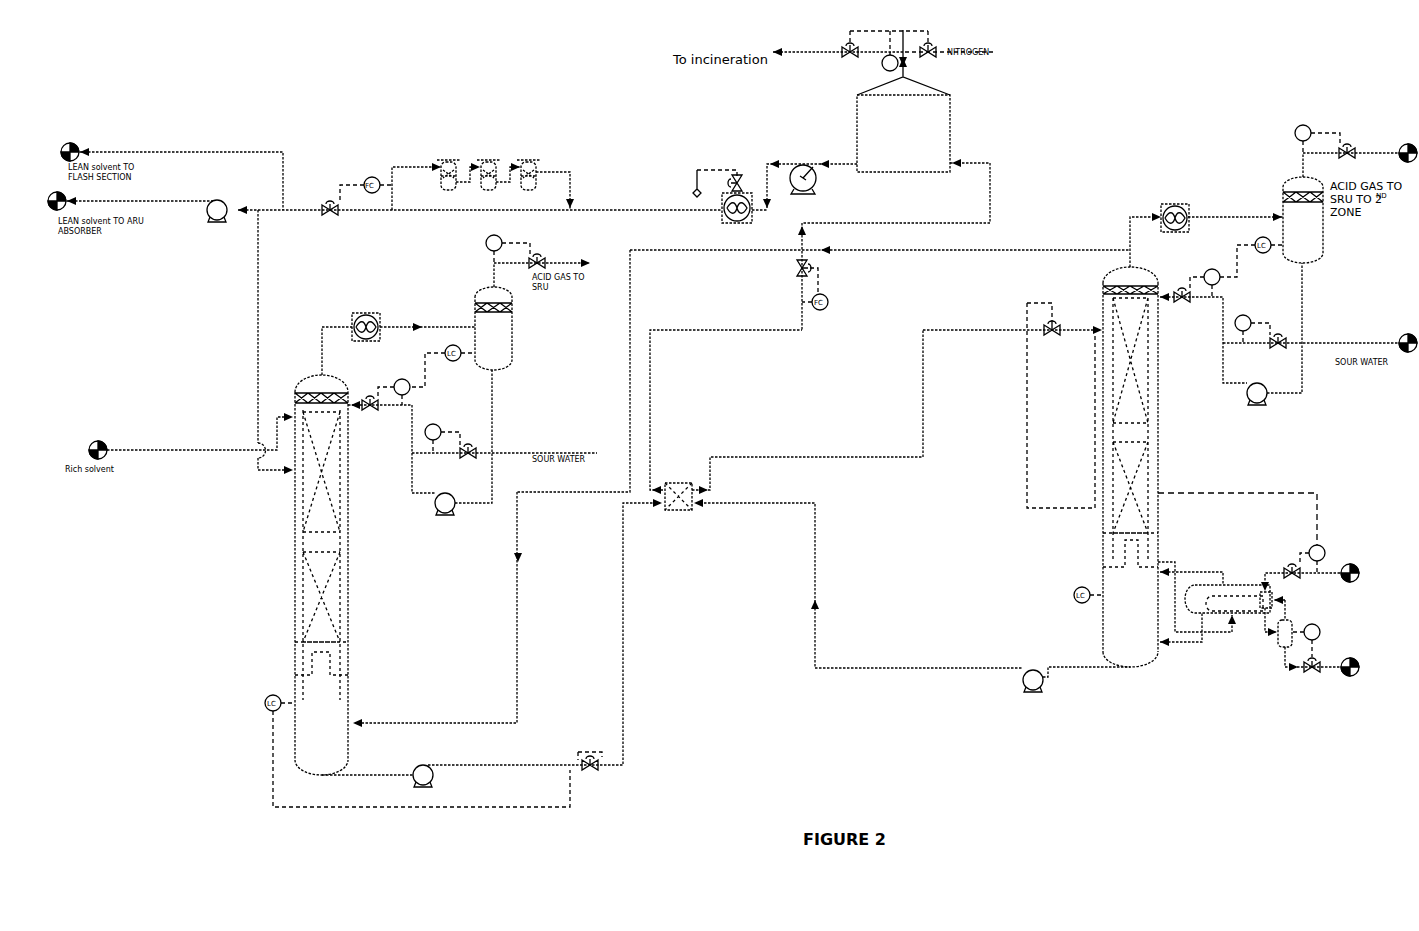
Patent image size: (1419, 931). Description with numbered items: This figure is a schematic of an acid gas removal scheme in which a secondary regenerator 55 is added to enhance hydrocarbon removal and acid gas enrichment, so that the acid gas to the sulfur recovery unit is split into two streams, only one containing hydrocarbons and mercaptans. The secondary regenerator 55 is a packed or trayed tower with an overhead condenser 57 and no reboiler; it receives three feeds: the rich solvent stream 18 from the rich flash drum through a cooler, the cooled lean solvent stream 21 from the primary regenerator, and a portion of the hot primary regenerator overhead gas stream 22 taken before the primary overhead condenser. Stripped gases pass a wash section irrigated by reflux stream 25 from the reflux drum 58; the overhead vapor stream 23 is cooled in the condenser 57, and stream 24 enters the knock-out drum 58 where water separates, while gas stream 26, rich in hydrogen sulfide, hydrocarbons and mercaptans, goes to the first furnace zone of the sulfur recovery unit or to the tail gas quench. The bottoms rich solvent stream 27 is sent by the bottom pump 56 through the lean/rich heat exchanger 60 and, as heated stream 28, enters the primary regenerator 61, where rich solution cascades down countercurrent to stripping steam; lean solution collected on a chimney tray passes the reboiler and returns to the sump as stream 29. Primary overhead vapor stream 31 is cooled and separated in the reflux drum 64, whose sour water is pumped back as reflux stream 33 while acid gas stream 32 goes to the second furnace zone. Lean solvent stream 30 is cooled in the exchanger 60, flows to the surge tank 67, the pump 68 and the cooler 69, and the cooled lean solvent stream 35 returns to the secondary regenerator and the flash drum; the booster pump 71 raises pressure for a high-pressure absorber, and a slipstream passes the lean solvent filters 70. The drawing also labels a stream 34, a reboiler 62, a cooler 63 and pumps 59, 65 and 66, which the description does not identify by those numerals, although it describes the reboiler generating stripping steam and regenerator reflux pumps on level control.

The rich solvent stream 18 is at (170, 450).
The cooled lean solvent stream 21 is at (258, 328).
The primary regenerator overhead gas stream 22 is at (443, 723).
The secondary regenerator overhead vapor stream 23 is at (318, 347).
The condensed overhead stream 24 is at (410, 327).
The reflux stream 25 is at (428, 493).
The gas stream 26 is at (590, 263).
The rich solvent stream 27 is at (390, 775).
The heated rich solvent stream 28 is at (807, 412).
The lean solution return stream 29 is at (1080, 667).
The lean solvent stream 30 is at (982, 668).
The primary regenerator overhead vapor stream 31 is at (1137, 217).
The acid gas stream 32 is at (1391, 153).
The reflux stream 33 is at (1223, 322).
The stripped solvent stream 34 is at (708, 330).
The cooled lean solvent stream 35 is at (644, 210).
The secondary regenerator 55 is at (292, 554).
The bottom pump 56 is at (411, 781).
The secondary overhead condenser 57 is at (350, 312).
The reflux drum 58 is at (515, 331).
The reflux pump 59 is at (433, 508).
The lean/rich heat exchanger 60 is at (668, 514).
The primary regenerator 61 is at (1104, 534).
The reboiler 62 is at (1224, 582).
The overhead condenser 63 is at (1177, 203).
The primary solvent regenerator reflux drum 64 is at (1280, 190).
The reflux pump 65 is at (1247, 402).
The bottoms pump 66 is at (1022, 690).
The surge tank 67 is at (953, 138).
The pump 68 is at (818, 182).
The cooler 69 is at (720, 221).
The lean solvent filters 70 is at (522, 158).
The booster pump 71 is at (212, 216).